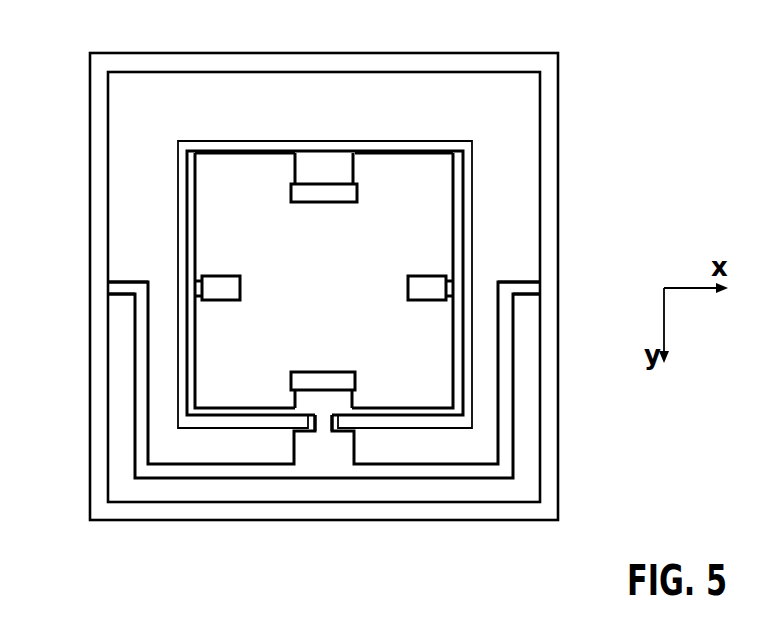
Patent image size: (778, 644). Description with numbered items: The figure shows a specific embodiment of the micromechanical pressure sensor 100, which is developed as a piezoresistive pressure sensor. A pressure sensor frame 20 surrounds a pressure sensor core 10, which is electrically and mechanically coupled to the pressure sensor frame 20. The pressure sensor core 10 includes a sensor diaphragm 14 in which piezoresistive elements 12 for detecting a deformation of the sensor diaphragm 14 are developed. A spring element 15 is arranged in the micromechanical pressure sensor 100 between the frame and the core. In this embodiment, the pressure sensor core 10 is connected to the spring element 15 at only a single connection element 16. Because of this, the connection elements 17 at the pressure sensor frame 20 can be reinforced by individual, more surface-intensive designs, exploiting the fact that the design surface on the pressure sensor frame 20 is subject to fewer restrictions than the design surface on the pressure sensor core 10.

The pressure sensor core 10 is at (178, 204).
The piezoresistive elements 12 is at (290, 196).
The sensor diaphragm 14 is at (341, 302).
The spring element 15 is at (513, 433).
The connection element 16 is at (354, 447).
The connection elements 17 is at (135, 282).
The pressure sensor frame 20 is at (558, 146).
The micromechanical pressure sensor 100 is at (97, 530).